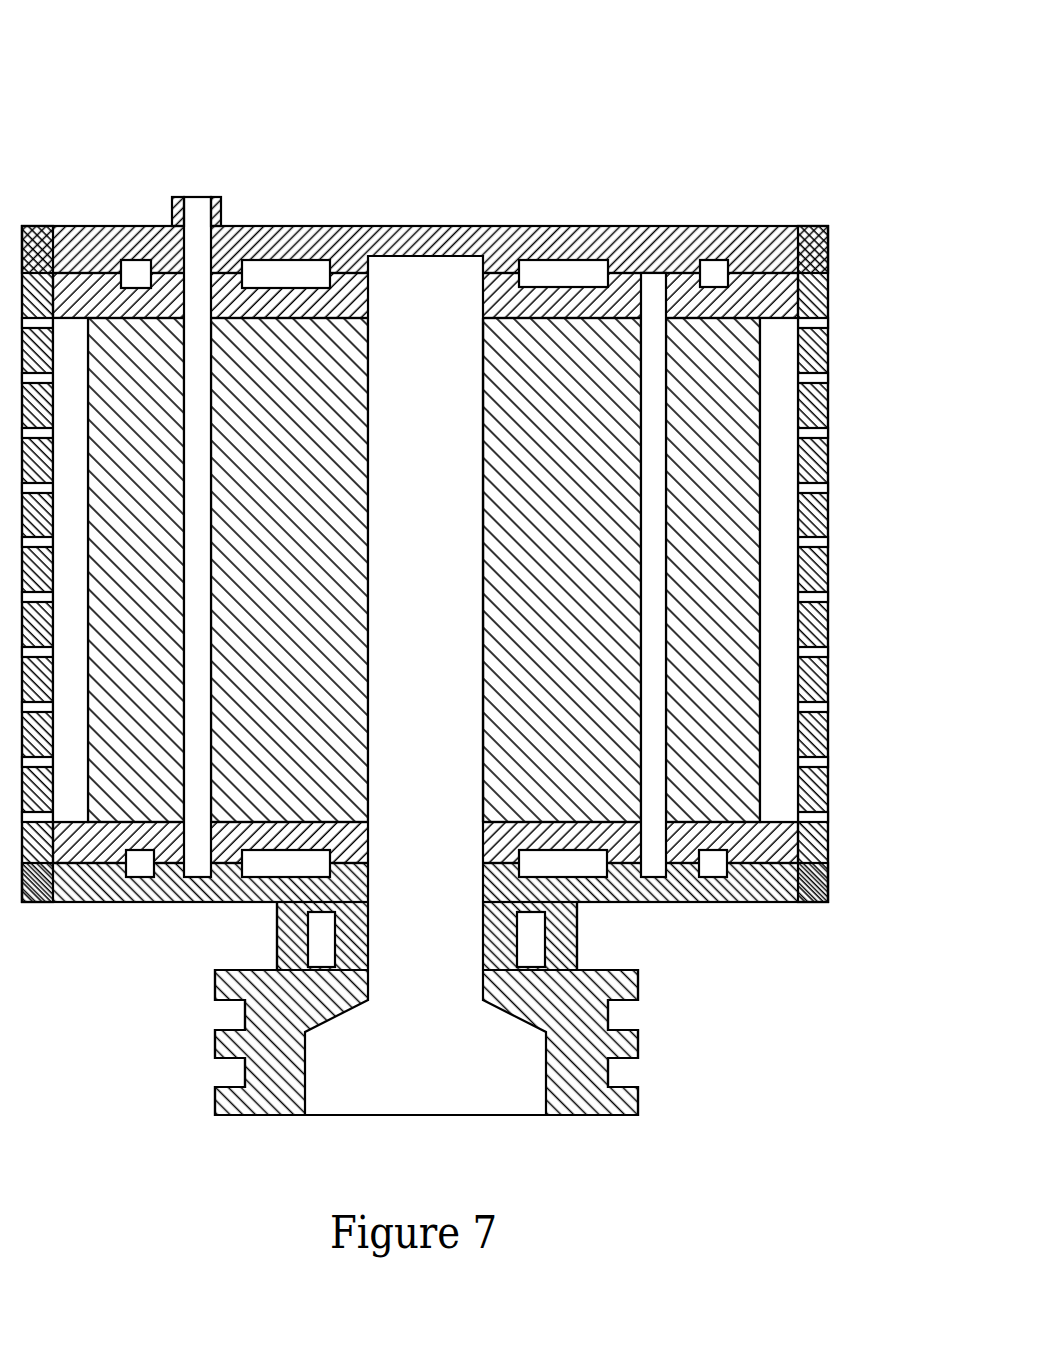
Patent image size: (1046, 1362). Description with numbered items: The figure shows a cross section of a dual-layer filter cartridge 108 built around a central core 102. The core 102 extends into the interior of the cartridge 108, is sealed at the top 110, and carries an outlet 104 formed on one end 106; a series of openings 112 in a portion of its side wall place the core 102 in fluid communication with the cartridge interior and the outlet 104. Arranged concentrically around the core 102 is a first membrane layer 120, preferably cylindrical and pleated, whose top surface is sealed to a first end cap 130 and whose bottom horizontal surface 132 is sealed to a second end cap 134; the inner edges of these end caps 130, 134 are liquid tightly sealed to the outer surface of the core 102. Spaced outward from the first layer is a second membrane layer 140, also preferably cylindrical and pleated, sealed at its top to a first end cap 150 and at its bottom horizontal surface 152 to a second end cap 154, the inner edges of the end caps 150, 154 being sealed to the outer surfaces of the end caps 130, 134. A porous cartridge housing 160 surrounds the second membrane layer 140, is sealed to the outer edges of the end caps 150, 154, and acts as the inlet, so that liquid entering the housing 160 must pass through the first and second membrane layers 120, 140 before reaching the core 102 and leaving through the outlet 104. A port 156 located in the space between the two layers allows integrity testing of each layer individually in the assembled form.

The core 102 is at (448, 357).
The outlet 104 is at (482, 1087).
The end 106 is at (270, 1095).
The cartridge 108 is at (498, 138).
The top 110 is at (450, 227).
The openings 112 is at (483, 410).
The first membrane layer 120 is at (275, 355).
The first end cap 130 is at (346, 300).
The bottom horizontal surface 132 is at (233, 782).
The second end cap 134 is at (252, 862).
The second membrane layer 140 is at (130, 380).
The first end cap 150 is at (165, 295).
The bottom horizontal surface 152 is at (743, 775).
The second end cap 154 is at (760, 903).
The port 156 is at (195, 220).
The porous cartridge housing 160 is at (828, 468).